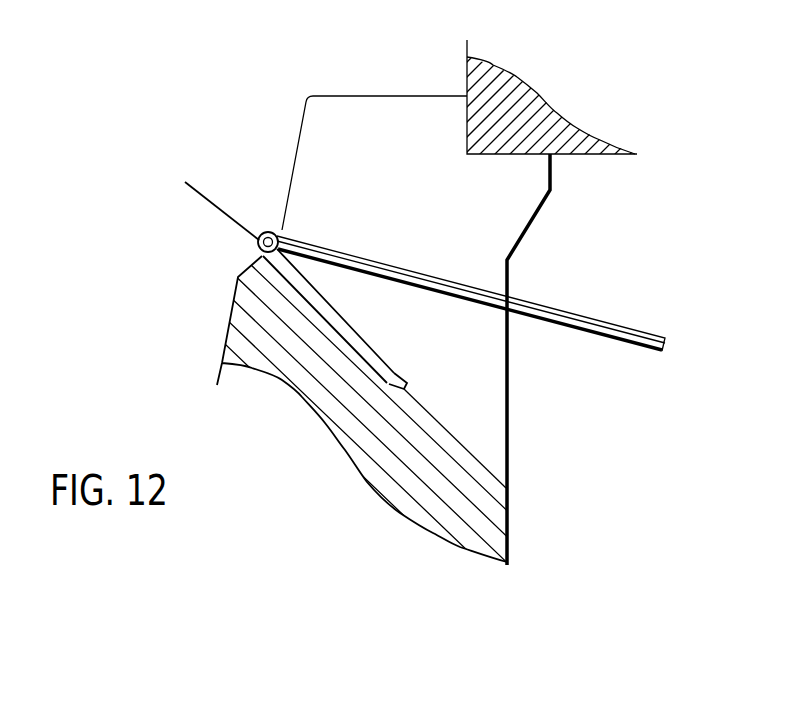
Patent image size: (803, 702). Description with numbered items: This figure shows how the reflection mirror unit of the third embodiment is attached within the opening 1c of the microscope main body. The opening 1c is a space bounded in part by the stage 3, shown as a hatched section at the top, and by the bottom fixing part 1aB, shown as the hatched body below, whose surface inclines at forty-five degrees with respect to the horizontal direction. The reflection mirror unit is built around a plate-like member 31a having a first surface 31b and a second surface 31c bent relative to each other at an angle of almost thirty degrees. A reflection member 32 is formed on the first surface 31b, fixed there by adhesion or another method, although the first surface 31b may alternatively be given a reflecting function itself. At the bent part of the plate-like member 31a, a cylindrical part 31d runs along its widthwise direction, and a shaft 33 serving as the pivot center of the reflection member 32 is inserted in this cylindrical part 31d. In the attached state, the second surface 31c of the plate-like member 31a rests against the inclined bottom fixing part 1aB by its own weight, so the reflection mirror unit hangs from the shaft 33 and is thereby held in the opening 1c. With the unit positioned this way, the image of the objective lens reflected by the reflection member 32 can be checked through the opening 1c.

The opening 1c is at (400, 115).
The stage 3 is at (580, 145).
The shaft 33 is at (258, 232).
The cylindrical part 31d is at (268, 231).
The reflection member 32 is at (608, 322).
The first surface 31b is at (627, 334).
The second surface 31c is at (395, 372).
The plate-like member 31a is at (475, 340).
The bottom fixing part 1aB is at (477, 458).